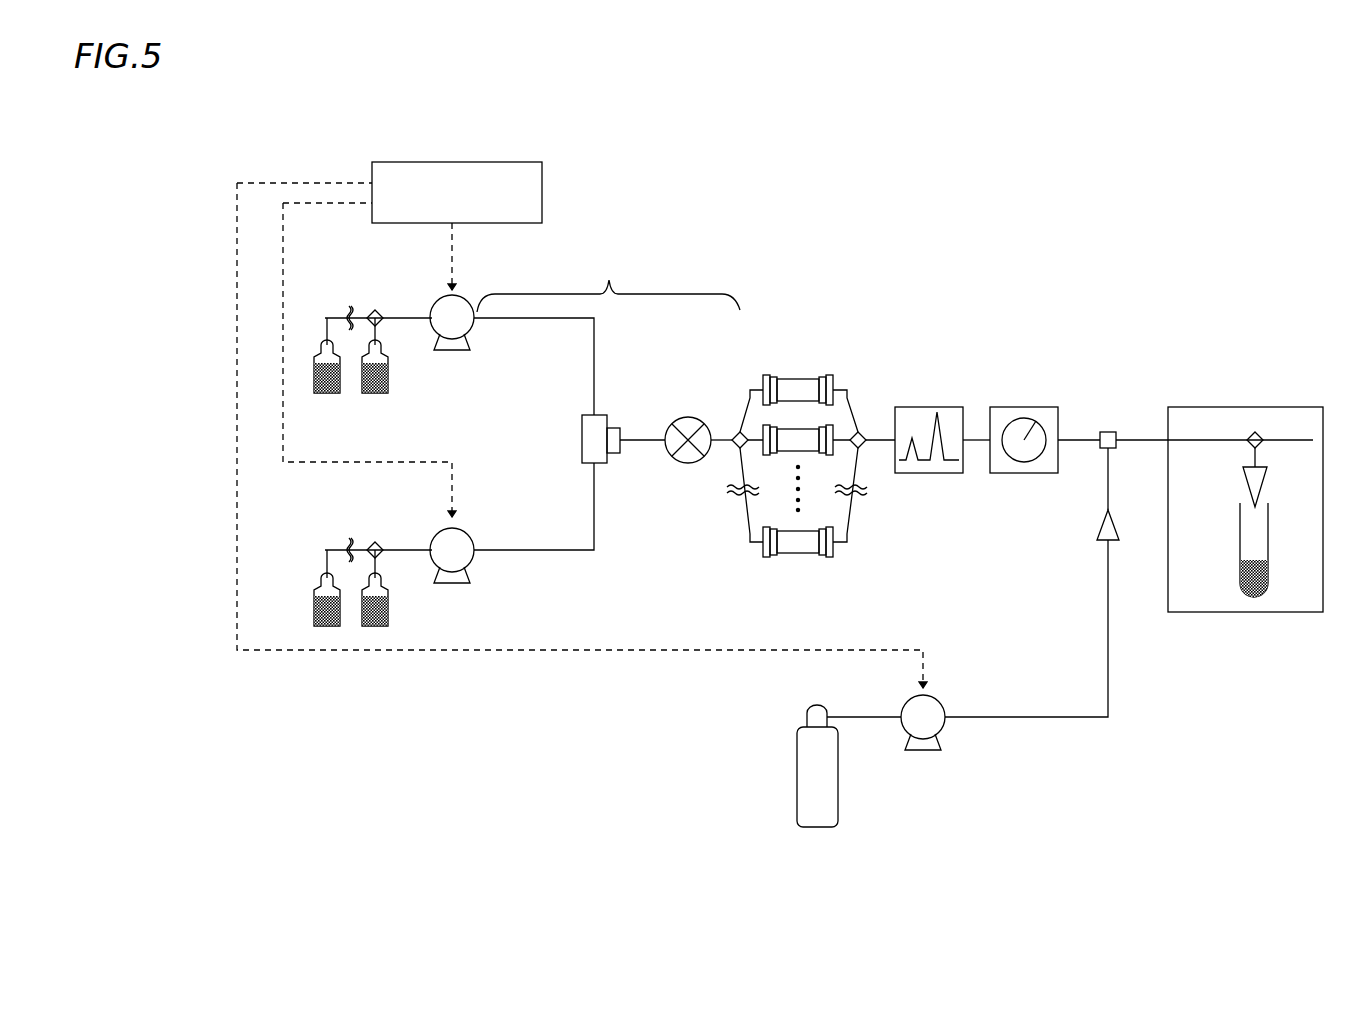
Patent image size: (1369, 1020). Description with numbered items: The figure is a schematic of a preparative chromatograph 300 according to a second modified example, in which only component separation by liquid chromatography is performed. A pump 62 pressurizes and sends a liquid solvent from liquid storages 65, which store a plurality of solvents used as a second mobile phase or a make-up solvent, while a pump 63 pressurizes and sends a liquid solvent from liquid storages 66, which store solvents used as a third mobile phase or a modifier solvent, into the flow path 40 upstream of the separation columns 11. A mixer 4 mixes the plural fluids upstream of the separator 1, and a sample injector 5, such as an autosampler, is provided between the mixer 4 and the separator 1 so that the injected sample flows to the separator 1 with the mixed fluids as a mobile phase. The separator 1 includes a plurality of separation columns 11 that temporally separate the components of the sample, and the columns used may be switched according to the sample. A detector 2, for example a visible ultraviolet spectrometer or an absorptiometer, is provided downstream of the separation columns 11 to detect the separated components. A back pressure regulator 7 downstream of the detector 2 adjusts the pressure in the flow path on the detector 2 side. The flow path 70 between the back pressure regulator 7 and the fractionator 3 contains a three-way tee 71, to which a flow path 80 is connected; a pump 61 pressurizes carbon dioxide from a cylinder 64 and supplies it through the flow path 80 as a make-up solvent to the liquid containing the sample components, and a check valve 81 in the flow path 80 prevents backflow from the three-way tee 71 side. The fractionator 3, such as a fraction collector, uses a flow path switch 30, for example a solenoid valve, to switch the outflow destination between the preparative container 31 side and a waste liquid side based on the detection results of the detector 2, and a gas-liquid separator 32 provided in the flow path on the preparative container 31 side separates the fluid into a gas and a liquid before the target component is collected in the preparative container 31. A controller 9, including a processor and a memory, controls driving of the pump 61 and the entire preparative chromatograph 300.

The preparative chromatograph 300 is at (215, 147).
The controller 9 is at (542, 178).
The pump 62 is at (435, 303).
The pump 63 is at (434, 536).
The pump 61 is at (942, 700).
The liquid storages 65 is at (398, 371).
The liquid storages 66 is at (300, 595).
The flow path 40 is at (607, 402).
The mixer 4 is at (608, 425).
The sample injector 5 is at (690, 418).
The separator 1 is at (813, 439).
The separation columns 11 is at (800, 376).
The detector 2 is at (937, 406).
The back pressure regulator 7 is at (1035, 406).
The three-way tee 71 is at (1114, 432).
The flow path 70 is at (1143, 440).
The check valve 81 is at (1097, 526).
The flow path 80 is at (1106, 627).
The cylinder 64 is at (838, 780).
The fractionator 3 is at (1246, 482).
The flow path switch 30 is at (1262, 436).
The gas-liquid separator 32 is at (1243, 482).
The preparative container 31 is at (1268, 530).